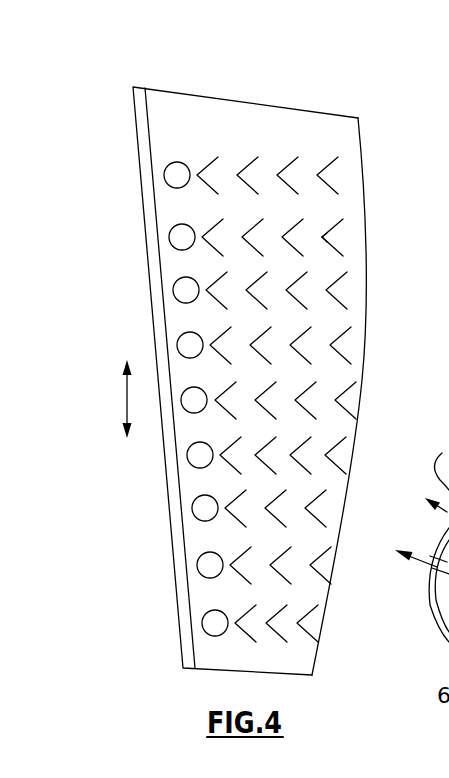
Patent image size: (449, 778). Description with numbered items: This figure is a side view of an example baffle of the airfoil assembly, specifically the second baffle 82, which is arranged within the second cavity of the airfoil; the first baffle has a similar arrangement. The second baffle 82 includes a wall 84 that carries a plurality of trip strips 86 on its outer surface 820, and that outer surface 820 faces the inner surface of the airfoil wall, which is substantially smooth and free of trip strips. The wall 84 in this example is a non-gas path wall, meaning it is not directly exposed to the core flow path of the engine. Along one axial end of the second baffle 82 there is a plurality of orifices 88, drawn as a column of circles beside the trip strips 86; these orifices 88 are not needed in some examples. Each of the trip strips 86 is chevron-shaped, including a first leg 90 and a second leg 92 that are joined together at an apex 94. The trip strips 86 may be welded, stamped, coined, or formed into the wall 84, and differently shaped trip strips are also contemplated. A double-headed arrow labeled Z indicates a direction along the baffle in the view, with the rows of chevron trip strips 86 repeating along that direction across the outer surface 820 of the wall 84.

The second baffle 82 is at (284, 80).
The outer surface 820 is at (305, 172).
The wall 84 is at (371, 146).
The trip strips 86 is at (341, 181).
The orifices 88 is at (175, 175).
The first leg 90 is at (334, 222).
The second leg 92 is at (333, 248).
The apex 94 is at (326, 229).
The Z direction Z is at (127, 400).